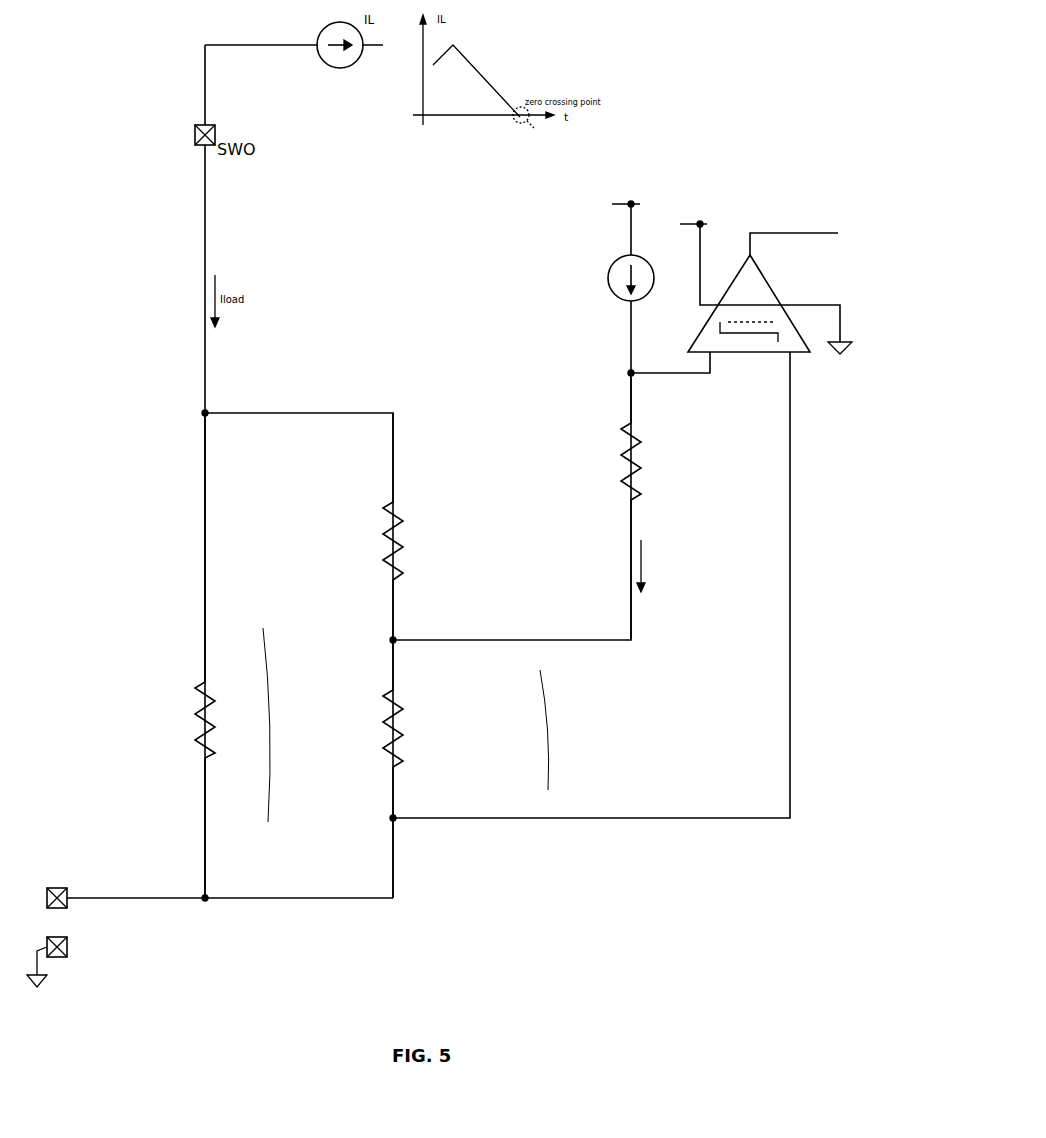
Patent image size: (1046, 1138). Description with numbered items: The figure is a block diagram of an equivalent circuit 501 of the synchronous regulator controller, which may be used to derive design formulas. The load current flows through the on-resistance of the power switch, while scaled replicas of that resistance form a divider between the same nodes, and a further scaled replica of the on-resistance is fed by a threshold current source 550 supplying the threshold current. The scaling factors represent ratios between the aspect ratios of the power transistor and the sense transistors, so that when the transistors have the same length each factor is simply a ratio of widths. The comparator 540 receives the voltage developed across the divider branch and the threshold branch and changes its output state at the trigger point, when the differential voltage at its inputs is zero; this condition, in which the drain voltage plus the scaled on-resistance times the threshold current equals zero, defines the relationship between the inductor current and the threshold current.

The equivalent circuit 501 is at (408, 666).
The threshold current source 550 is at (608, 271).
The comparator 540 is at (750, 353).